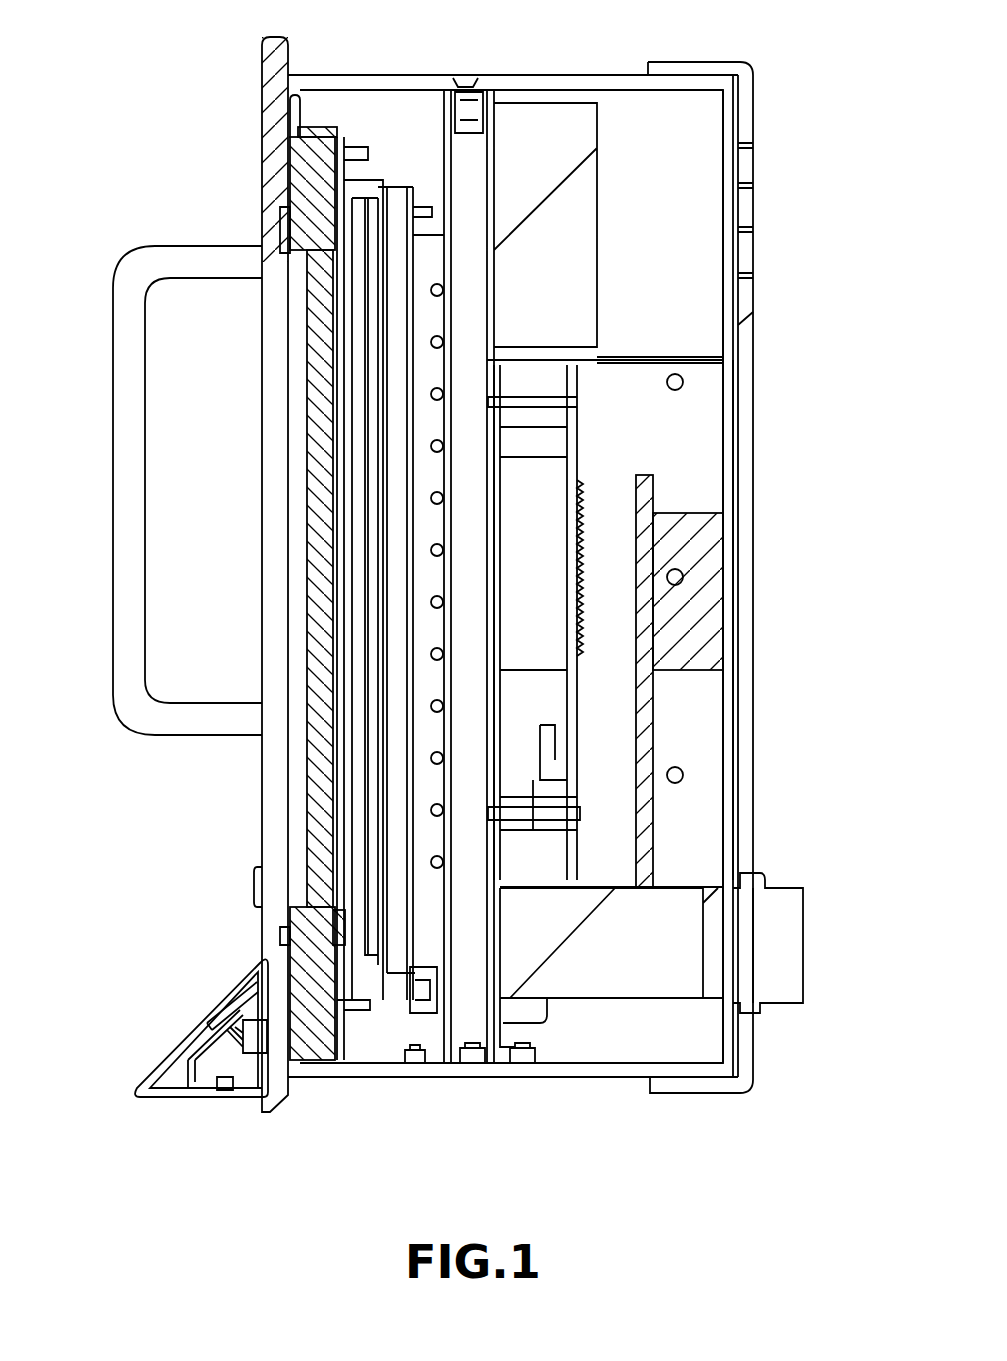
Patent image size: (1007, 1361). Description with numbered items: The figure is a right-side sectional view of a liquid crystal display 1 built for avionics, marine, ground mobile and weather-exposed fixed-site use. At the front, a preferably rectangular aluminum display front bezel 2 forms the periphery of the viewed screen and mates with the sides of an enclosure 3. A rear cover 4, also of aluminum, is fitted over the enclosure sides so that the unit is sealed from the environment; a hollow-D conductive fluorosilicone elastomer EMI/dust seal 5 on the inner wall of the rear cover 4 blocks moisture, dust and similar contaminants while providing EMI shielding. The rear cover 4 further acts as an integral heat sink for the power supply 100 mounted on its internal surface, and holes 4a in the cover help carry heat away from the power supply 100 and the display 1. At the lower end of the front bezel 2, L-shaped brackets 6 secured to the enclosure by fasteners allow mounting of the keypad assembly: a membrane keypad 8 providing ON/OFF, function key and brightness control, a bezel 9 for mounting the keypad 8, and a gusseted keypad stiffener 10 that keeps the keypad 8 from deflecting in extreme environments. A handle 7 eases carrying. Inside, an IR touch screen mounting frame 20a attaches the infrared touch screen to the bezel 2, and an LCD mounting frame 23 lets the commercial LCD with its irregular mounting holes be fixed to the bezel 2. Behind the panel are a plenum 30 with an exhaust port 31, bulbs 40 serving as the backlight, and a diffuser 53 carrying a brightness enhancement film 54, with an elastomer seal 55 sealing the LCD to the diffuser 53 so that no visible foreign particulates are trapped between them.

The display 1 is at (90, 150).
The display front bezel 2 is at (272, 62).
The enclosure 3 is at (590, 85).
The rear cover 4 is at (745, 166).
The holes 4a is at (750, 279).
The EMI/dust seal 5 is at (733, 663).
The L-shaped brackets 6 is at (190, 1067).
The handle 7 is at (125, 415).
The keypad 8 is at (203, 1027).
The bezel 9 is at (133, 1093).
The keypad stiffener 10 is at (207, 1073).
The IR touch screen mounting frame 20a is at (333, 1060).
The LCD mounting frame 23 is at (392, 192).
The plenum 30 is at (467, 500).
The exhaust port 31 is at (700, 336).
The bulbs 40 is at (447, 865).
The diffuser 53 is at (380, 230).
The brightness enhancement film 54 is at (347, 220).
The elastomer seal 55 is at (312, 890).
The power supply 100 is at (710, 547).